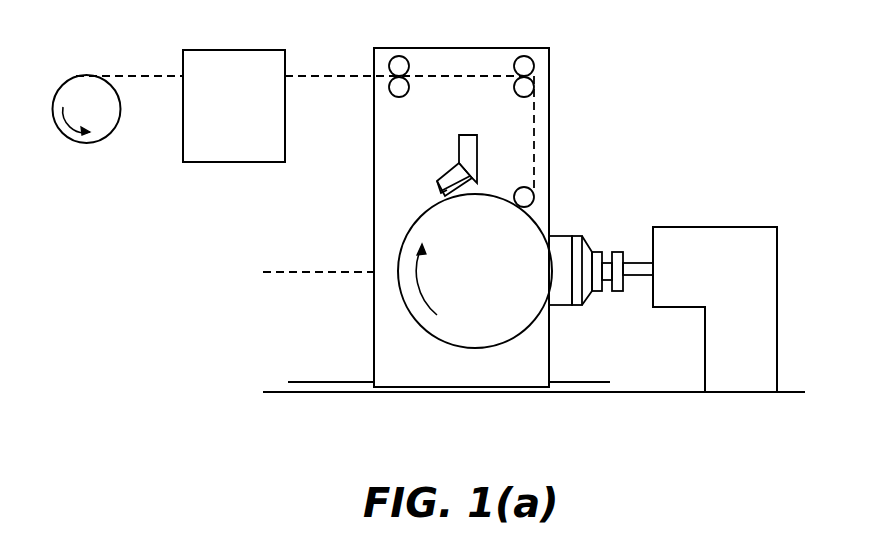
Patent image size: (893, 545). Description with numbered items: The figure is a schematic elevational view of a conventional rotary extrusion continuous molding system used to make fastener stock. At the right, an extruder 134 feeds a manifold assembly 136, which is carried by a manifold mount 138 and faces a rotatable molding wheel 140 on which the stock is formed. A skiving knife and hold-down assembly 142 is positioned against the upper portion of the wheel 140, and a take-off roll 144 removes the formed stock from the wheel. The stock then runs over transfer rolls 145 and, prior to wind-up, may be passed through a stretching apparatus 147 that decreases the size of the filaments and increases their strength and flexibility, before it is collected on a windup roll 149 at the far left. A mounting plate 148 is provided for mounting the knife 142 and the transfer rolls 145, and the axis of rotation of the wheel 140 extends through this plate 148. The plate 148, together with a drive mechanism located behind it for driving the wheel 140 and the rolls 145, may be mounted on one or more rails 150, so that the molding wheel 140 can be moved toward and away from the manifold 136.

The extruder 134 is at (738, 278).
The manifold assembly 136 is at (575, 235).
The manifold mount 138 is at (617, 250).
The rotatable molding wheel 140 is at (495, 286).
The skiving knife and hold-down assembly 142 is at (459, 149).
The take-off roll 144 is at (518, 187).
The transfer rolls 145 is at (513, 89).
The stretching apparatus 147 is at (253, 118).
The mounting plate 148 is at (374, 227).
The windup roll 149 is at (100, 120).
The rails 150 is at (328, 379).